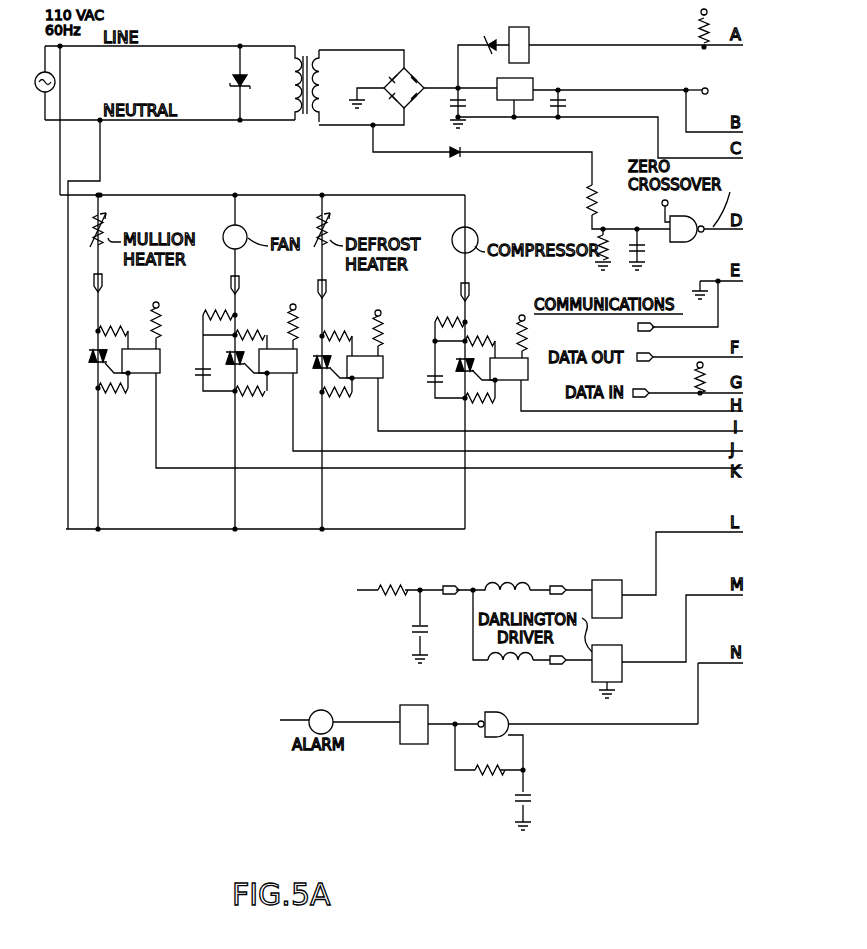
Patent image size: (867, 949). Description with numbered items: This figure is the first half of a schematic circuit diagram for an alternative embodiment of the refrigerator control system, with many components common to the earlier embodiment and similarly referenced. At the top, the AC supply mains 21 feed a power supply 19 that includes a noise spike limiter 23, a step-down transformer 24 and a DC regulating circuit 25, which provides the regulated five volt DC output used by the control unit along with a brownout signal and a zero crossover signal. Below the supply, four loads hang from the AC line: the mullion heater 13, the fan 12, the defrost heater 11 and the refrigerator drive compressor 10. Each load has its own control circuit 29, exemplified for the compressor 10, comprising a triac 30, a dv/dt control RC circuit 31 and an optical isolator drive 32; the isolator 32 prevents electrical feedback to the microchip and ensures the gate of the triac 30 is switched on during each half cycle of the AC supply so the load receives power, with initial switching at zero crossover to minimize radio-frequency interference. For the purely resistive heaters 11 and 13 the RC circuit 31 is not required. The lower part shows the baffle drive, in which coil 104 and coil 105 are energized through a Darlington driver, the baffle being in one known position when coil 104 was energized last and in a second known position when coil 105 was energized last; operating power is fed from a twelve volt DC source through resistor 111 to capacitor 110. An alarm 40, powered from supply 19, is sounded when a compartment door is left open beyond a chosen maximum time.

The refrigerator drive compressor 10 is at (474, 231).
The defrost heater 11 is at (331, 233).
The fan 12 is at (248, 229).
The mullion heater 13 is at (98, 236).
The power supply 19 is at (519, 93).
The AC supply mains 21 is at (60, 70).
The noise spike limiter 23 is at (228, 80).
The step-down transformer 24 is at (311, 127).
The DC regulating circuit 25 is at (533, 80).
The control circuits 29 is at (126, 188).
The triac 30 is at (455, 351).
The dv/dt control RC circuit 31 is at (432, 388).
The optical isolator drive 32 is at (508, 357).
The alarm 40 is at (331, 711).
The coil 104 is at (501, 592).
The coil 105 is at (515, 664).
The capacitor 110 is at (407, 631).
The resistor 111 is at (383, 596).